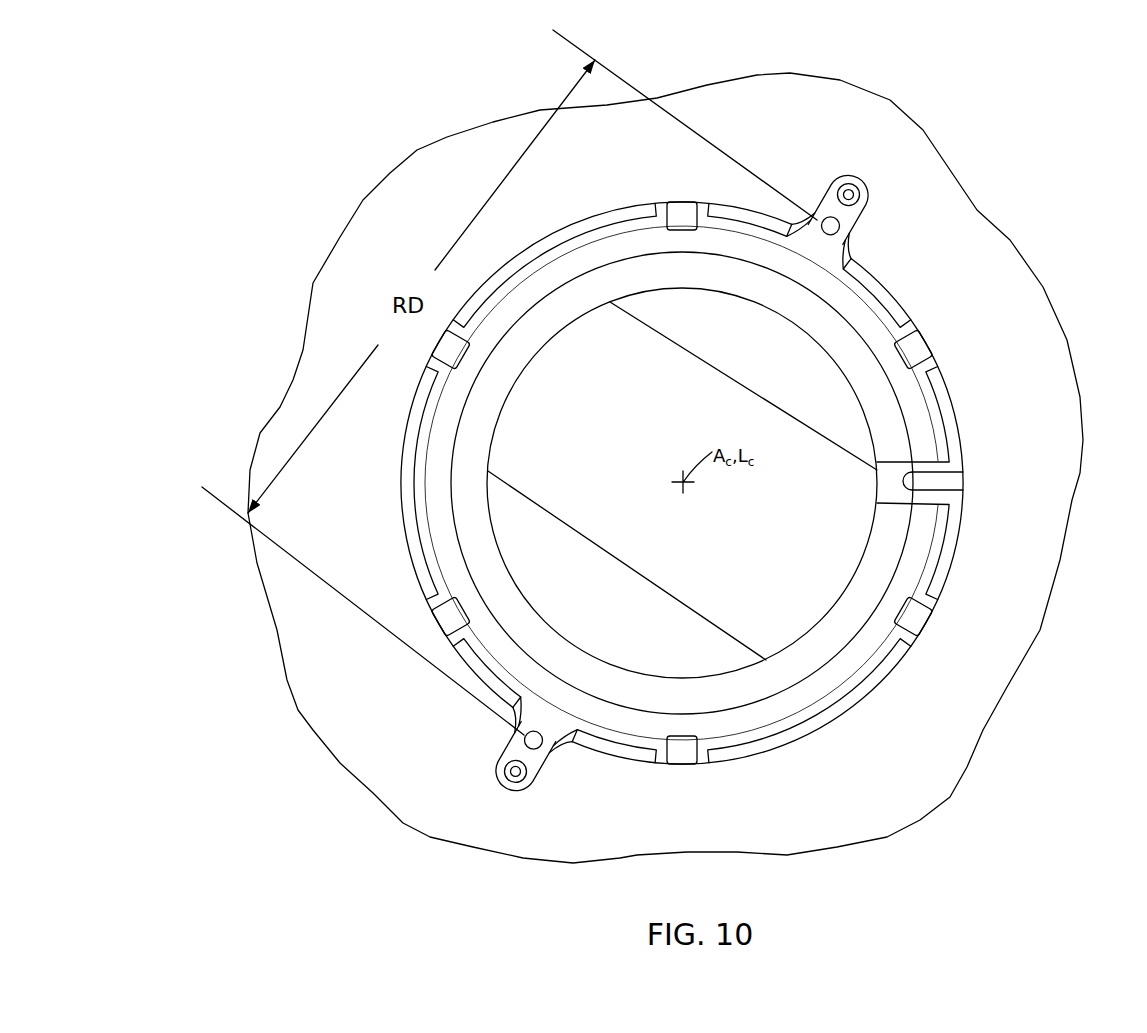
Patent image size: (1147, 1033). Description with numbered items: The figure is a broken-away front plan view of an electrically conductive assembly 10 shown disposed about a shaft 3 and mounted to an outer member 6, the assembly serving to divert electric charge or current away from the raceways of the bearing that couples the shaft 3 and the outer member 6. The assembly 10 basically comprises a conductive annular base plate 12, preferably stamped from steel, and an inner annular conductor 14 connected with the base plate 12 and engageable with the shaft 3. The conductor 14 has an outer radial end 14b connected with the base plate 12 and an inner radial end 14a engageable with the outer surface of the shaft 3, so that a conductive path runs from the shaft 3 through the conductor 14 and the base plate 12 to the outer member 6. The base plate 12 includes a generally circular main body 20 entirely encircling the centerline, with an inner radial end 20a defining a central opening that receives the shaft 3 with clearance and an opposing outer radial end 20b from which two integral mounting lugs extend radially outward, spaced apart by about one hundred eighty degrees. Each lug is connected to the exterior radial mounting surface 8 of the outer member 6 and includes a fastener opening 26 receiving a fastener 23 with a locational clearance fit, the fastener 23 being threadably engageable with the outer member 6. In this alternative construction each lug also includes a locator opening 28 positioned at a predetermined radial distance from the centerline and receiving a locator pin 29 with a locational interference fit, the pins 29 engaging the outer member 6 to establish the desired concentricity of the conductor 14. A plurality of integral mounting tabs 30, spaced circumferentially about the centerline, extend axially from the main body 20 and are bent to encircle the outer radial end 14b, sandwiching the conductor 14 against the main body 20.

The shaft 3 is at (837, 563).
The outer member 6 is at (1037, 293).
The exterior mounting surface 8 is at (997, 339).
The electrically conductive assembly 10 is at (943, 275).
The conductive annular base plate 12 is at (890, 703).
The inner annular conductor 14 is at (815, 717).
The inner radial end 14a is at (838, 600).
The outer radial end 14b is at (877, 667).
The main body 20 is at (968, 437).
The inner radial end 20a is at (913, 472).
The outer radial end 20b is at (950, 489).
The fastener 23 is at (838, 176).
The fastener opening 26 is at (866, 196).
The locator opening 28 is at (842, 228).
The locator pin 29 is at (855, 244).
The mounting tab 30 is at (682, 202).